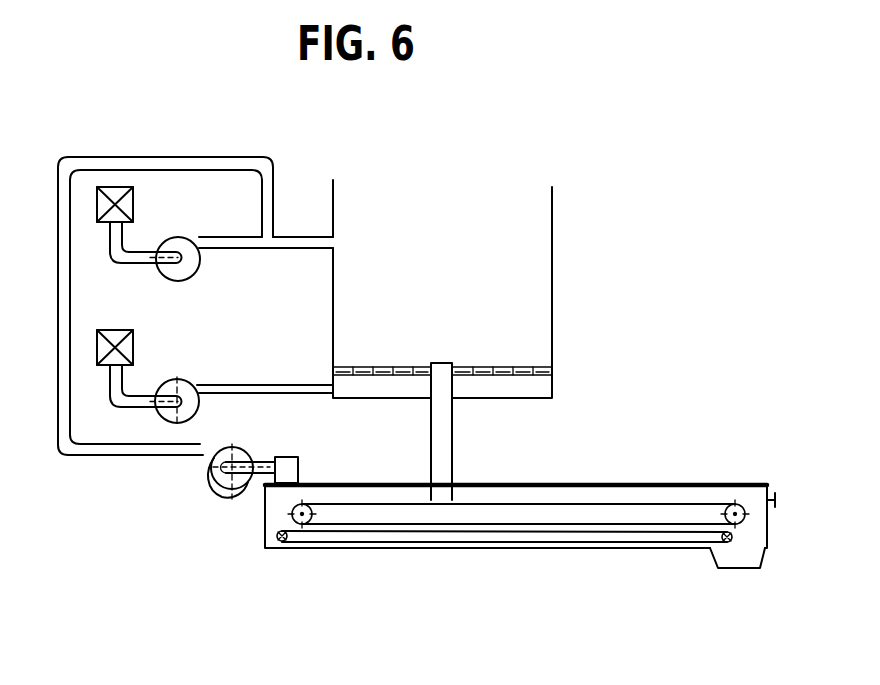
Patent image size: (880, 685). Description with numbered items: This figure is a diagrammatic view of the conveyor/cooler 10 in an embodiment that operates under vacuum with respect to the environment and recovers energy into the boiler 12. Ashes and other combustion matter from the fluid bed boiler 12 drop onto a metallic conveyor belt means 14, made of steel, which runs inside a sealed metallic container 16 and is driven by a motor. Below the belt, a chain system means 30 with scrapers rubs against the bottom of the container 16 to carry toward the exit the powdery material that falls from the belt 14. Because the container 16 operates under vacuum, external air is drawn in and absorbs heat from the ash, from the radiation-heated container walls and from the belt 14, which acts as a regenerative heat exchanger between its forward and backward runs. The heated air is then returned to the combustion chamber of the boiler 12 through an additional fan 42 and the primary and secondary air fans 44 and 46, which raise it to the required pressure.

The conveyor/cooler 10 is at (694, 340).
The fluid bed boiler 12 is at (552, 312).
The metallic conveyor belt means 14 is at (332, 505).
The sealed metallic container 16 is at (542, 483).
The chain system means 30 is at (570, 537).
The additional fan 42 is at (213, 492).
The primary air fan 44 is at (198, 274).
The secondary air fan 46 is at (200, 405).